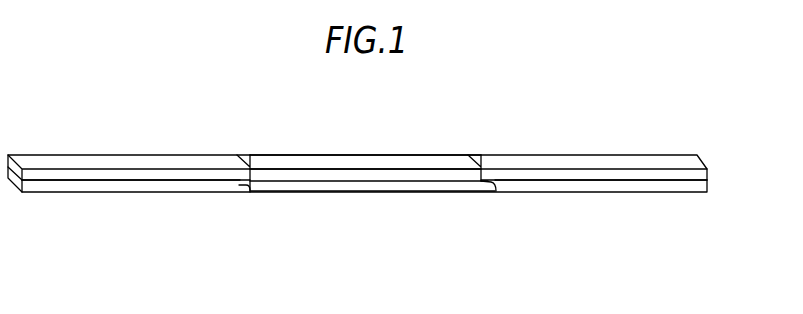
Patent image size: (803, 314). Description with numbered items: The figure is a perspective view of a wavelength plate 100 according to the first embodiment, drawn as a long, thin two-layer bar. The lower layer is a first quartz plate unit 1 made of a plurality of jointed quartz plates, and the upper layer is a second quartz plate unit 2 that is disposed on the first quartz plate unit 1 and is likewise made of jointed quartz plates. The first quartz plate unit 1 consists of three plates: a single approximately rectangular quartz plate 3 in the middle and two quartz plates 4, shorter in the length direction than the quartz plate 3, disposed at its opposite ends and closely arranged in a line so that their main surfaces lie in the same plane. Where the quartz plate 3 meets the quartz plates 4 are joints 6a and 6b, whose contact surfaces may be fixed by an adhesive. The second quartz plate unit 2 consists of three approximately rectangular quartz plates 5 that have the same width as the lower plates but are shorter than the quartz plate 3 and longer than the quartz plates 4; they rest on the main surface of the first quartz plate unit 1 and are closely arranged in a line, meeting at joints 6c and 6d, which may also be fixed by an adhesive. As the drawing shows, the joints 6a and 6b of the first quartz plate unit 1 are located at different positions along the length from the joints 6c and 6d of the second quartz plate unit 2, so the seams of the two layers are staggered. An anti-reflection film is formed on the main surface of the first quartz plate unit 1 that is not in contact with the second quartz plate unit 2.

The wavelength plate 100 is at (666, 80).
The first quartz plate unit 1 is at (306, 212).
The second quartz plate unit 2 is at (341, 132).
The quartz plate 3 is at (403, 191).
The quartz plates 4 is at (143, 191).
The quartz plates 5 is at (133, 157).
The joint 6a is at (250, 191).
The joint 6b is at (496, 191).
The joint 6c is at (247, 158).
The joint 6d is at (471, 157).